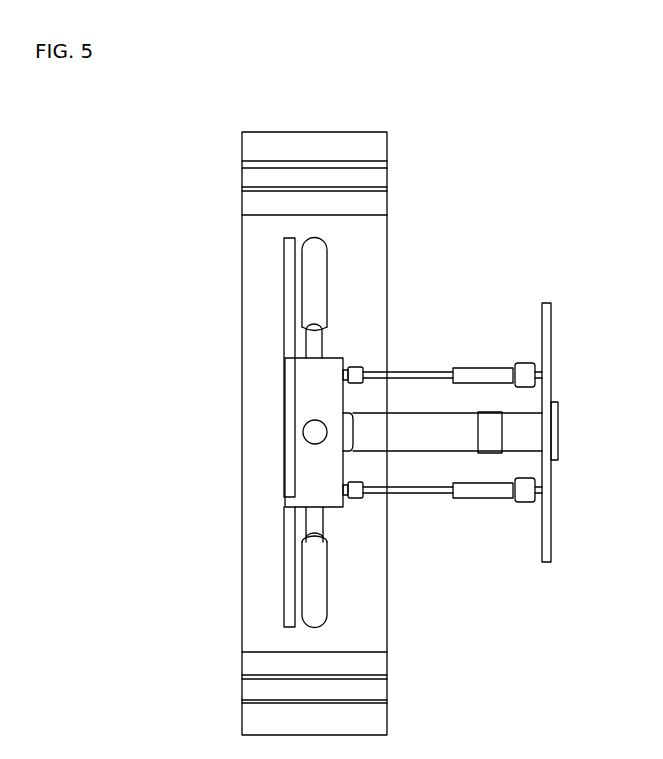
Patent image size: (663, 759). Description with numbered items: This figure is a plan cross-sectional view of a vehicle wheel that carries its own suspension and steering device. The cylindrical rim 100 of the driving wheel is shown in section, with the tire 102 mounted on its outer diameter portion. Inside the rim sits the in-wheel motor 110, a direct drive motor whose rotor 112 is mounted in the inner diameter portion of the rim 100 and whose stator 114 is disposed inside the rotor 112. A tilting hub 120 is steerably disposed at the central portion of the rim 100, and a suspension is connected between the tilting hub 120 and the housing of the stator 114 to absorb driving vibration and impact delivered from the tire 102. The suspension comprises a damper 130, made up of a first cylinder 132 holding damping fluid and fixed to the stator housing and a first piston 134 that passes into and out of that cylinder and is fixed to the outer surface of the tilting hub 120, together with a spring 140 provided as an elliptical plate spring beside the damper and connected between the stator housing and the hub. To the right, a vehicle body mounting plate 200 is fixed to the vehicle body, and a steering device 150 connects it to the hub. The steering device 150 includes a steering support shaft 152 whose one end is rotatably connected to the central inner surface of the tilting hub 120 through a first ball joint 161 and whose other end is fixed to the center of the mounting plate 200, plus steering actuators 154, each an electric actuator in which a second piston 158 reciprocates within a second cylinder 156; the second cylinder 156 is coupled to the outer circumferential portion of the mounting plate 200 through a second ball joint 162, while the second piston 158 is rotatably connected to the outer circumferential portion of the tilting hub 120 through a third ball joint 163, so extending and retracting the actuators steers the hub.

The rim 100 is at (243, 163).
The tire 102 is at (386, 128).
The in-wheel motor 110 is at (392, 193).
The rotor 112 is at (385, 168).
The stator 114 is at (385, 198).
The tilting hub 120 is at (306, 378).
The damper 130 is at (226, 433).
The first cylinder 132 is at (312, 267).
The first piston 134 is at (313, 344).
The spring 140 is at (288, 567).
The steering device 150 is at (501, 435).
The steering support shaft 152 is at (440, 440).
The steering actuator 154 is at (478, 454).
The second cylinder 156 is at (472, 369).
The second piston 158 is at (420, 372).
The first ball joint 161 is at (343, 446).
The second ball joint 162 is at (514, 503).
The third ball joint 163 is at (365, 500).
The vehicle body mounting plate 200 is at (553, 370).